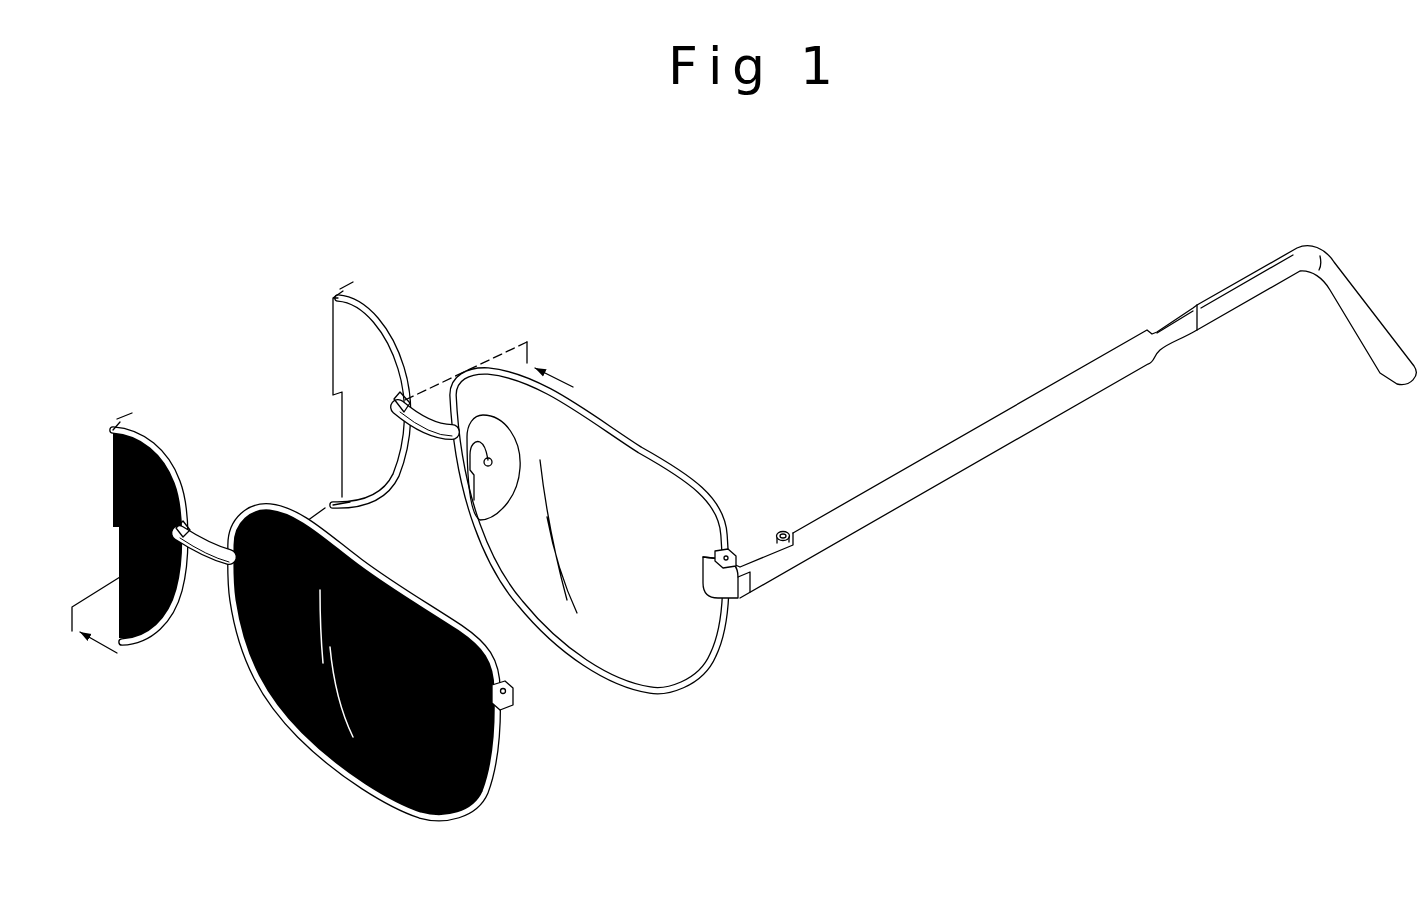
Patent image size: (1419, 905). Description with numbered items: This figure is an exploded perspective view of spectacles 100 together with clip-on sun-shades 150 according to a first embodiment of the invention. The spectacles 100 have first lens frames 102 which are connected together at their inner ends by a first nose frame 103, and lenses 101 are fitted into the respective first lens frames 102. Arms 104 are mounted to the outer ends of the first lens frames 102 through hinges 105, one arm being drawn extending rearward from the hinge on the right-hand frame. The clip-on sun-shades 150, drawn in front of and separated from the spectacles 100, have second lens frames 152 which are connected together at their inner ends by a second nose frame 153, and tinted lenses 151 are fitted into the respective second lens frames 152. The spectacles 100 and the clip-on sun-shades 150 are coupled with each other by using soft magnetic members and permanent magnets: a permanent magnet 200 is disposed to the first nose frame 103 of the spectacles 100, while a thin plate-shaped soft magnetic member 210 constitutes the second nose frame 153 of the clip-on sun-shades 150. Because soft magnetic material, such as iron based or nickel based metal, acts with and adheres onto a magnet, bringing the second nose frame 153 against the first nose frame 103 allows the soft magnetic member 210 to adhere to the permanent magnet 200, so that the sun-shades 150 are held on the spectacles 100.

The spectacles 100 is at (858, 507).
The lens 101 is at (655, 660).
The first lens frame 102 is at (715, 655).
The first nose frame 103 is at (422, 423).
The arm 104 is at (975, 462).
The hinge 105 is at (785, 530).
The clip-on sun-shades 150 is at (325, 641).
The tinted lens 151 is at (343, 780).
The second lens frame 152 is at (495, 778).
The second nose frame 153 is at (208, 540).
The permanent magnet 200 is at (417, 402).
The soft magnetic member 210 is at (200, 540).